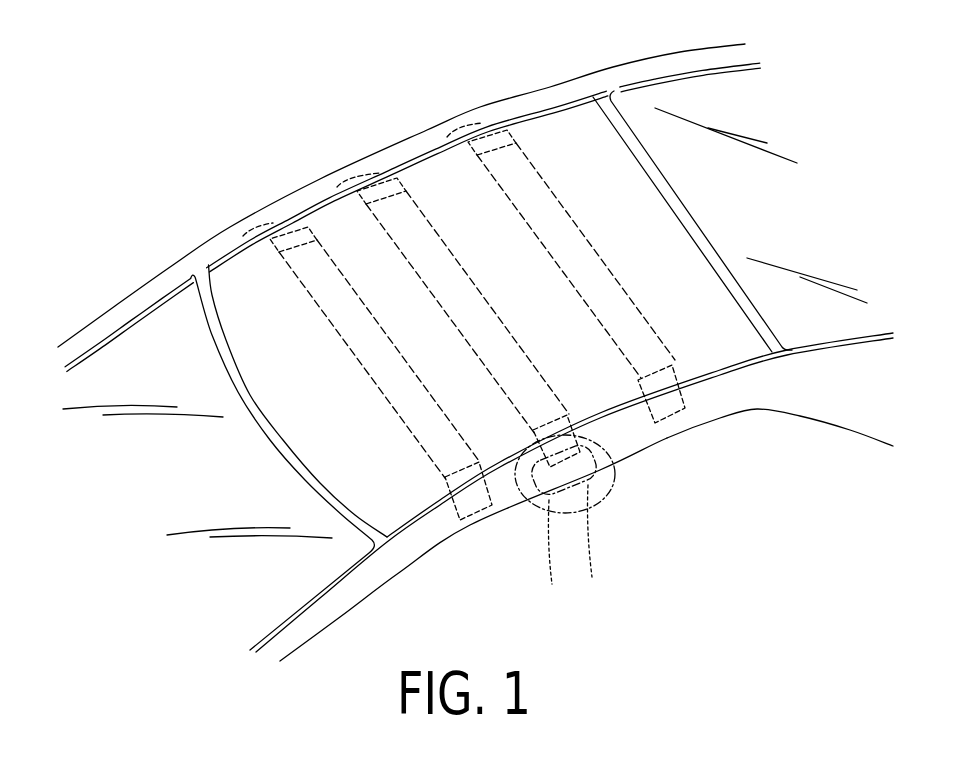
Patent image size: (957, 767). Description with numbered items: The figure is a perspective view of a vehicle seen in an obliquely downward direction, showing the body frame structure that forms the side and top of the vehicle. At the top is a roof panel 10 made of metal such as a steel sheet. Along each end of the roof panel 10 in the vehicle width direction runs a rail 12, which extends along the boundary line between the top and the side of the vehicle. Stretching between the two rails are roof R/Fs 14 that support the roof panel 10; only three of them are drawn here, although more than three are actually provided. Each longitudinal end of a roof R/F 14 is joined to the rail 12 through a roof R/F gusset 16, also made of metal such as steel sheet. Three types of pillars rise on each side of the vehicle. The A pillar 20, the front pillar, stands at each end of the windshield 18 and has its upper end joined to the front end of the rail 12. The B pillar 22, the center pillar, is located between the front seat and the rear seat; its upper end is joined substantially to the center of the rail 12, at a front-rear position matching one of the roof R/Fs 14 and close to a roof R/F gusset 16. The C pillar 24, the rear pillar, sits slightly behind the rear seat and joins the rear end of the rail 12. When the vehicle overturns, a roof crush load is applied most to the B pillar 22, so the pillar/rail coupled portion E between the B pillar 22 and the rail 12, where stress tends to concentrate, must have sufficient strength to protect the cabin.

The roof panel 10 is at (548, 146).
The rail 12 is at (272, 210).
The roof R/F 14 is at (422, 203).
The roof R/F gusset 16 is at (342, 187).
The windshield 18 is at (173, 365).
The A pillar 20 is at (107, 317).
The B pillar 22 is at (573, 543).
The C pillar 24 is at (850, 407).
The pillar/rail coupled portion E is at (612, 483).